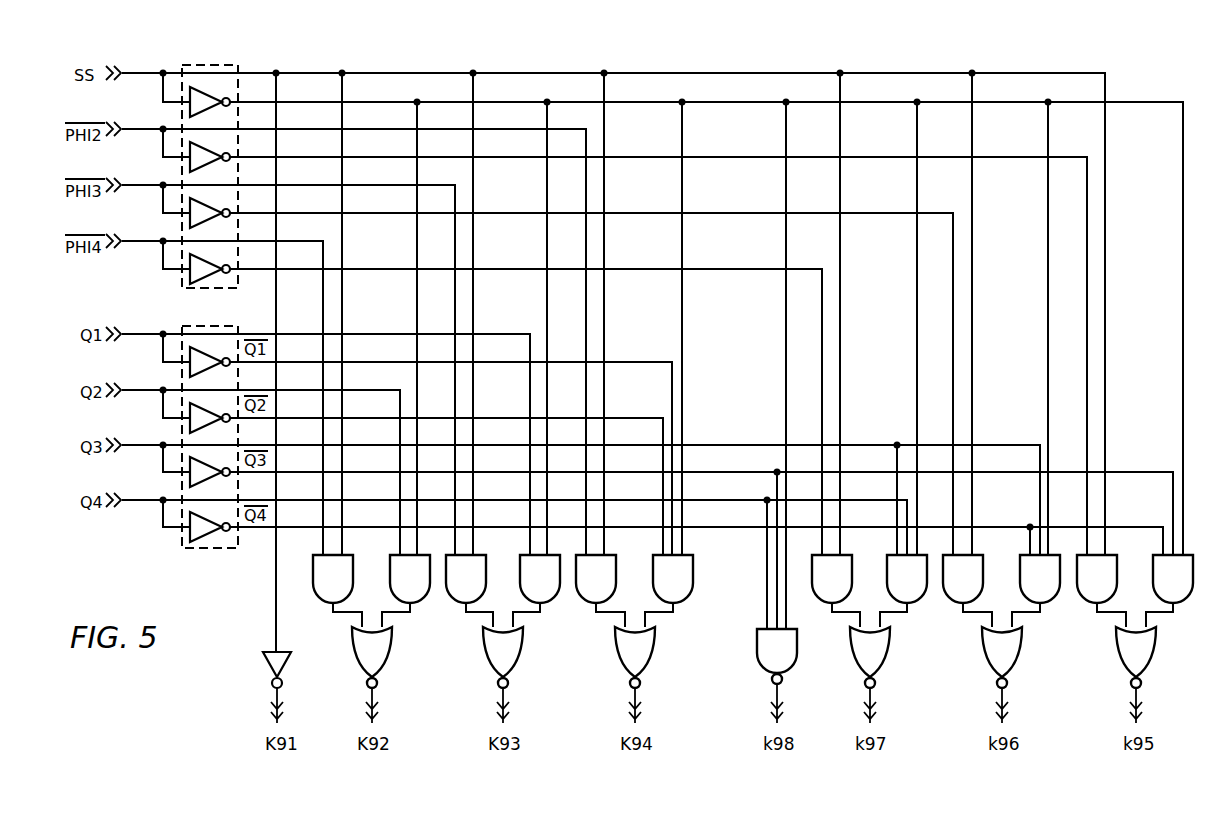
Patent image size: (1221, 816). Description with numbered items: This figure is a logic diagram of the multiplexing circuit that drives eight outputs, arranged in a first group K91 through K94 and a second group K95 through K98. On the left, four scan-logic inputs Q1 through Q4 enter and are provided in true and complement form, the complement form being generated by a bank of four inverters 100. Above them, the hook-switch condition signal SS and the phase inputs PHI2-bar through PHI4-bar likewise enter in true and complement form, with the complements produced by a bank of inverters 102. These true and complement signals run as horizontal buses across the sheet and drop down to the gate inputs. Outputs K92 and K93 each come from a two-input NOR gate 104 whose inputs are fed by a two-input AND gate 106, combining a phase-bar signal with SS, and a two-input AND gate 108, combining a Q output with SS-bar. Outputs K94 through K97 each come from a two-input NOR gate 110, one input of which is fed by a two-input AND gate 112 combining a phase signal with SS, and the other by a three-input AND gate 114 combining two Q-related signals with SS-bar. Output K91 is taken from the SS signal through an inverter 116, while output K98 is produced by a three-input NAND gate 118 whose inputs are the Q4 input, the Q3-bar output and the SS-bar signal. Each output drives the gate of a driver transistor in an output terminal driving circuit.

The bank of four inverters 100 is at (215, 549).
The bank of inverters 102 is at (240, 66).
The two-input NOR gate 104 is at (381, 668).
The two-input AND gate 106 is at (319, 602).
The two-input AND gate 108 is at (424, 602).
The two-input NOR gate 110 is at (644, 668).
The two-input AND gate 112 is at (616, 578).
The three-input AND gate 114 is at (681, 602).
The inverter 116 is at (263, 664).
The three-input NAND gate 118 is at (757, 650).